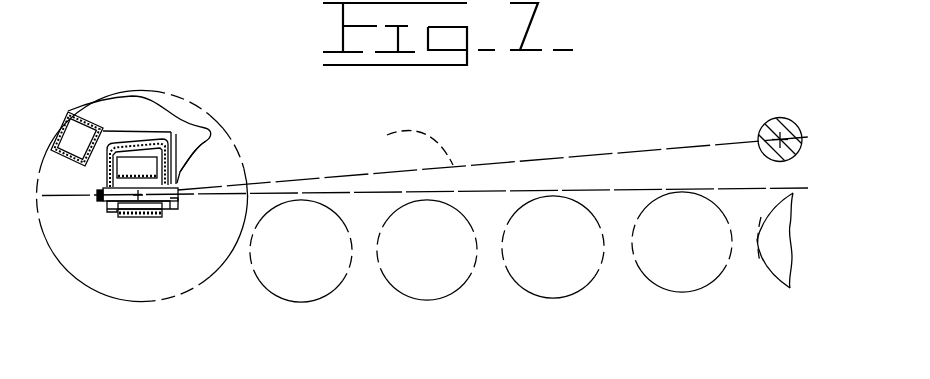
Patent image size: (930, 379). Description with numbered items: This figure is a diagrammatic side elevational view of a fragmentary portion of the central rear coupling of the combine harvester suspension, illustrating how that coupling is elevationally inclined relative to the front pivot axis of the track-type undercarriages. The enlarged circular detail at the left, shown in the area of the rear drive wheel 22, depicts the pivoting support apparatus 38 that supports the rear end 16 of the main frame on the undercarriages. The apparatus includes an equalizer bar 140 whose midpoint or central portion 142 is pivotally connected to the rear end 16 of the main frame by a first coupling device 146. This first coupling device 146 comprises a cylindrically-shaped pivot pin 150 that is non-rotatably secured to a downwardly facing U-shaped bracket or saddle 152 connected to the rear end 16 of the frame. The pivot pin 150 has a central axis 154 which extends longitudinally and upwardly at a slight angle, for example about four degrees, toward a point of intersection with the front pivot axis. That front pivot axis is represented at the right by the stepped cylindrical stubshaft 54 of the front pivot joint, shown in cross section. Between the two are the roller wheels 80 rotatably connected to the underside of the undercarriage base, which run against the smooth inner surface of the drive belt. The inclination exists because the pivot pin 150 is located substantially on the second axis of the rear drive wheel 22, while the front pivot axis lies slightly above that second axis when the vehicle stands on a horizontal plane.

The pivoting support apparatus 38 is at (158, 74).
The rear end 16 is at (125, 112).
The rear drive wheel 22 is at (177, 92).
The first coupling device 146 is at (192, 170).
The central axis 154 is at (382, 223).
The U-shaped bracket 152 is at (108, 167).
The pivot pin 150 is at (106, 204).
The central portion 142 is at (135, 218).
The equalizer bar 140 is at (148, 217).
The stubshaft 54 is at (770, 119).
The roller wheels 80 is at (665, 293).